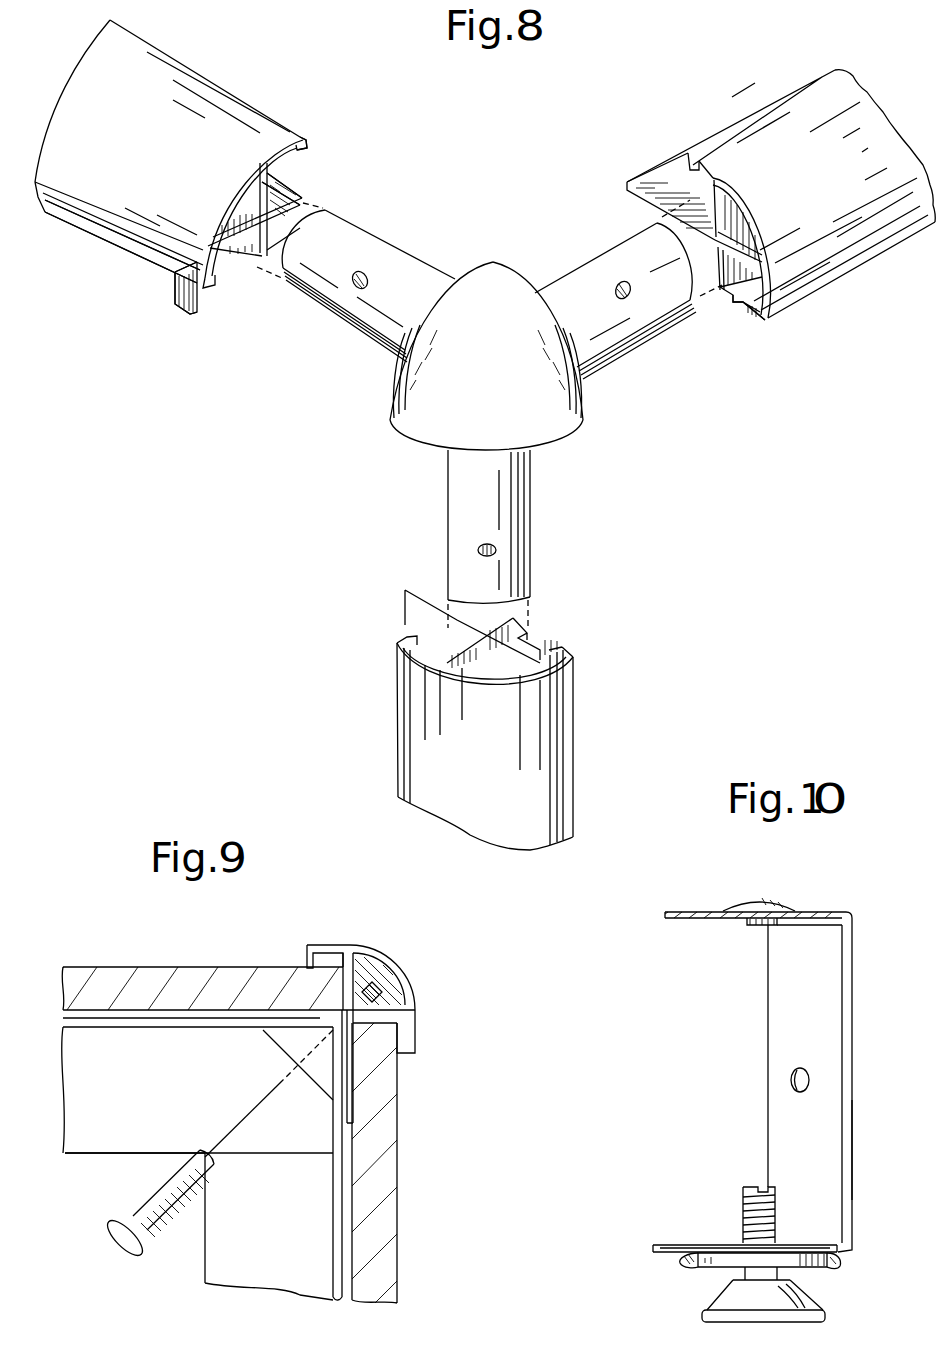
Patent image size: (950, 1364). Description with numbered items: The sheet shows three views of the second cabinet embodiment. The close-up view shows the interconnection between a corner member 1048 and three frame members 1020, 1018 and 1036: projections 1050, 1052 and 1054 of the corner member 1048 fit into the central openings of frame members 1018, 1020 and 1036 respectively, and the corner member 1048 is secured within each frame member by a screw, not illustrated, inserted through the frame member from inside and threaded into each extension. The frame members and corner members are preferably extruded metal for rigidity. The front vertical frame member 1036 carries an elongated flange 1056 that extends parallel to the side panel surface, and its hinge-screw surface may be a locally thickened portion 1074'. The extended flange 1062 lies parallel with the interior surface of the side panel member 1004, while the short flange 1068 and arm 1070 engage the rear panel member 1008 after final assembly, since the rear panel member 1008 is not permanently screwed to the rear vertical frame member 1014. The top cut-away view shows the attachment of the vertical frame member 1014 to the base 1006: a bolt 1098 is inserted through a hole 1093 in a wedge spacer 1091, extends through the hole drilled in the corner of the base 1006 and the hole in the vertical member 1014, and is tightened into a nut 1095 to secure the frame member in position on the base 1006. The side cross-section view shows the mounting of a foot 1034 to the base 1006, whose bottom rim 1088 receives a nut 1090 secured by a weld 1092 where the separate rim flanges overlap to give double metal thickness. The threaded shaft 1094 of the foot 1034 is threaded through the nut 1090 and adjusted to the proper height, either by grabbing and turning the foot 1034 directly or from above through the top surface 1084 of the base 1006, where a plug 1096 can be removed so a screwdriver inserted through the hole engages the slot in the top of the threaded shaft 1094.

In FIG. 8, the frame member 1020 is at (140, 129).
In FIG. 8, the frame member 1018 is at (834, 187).
In FIG. 8, the front vertical frame member 1036 is at (577, 706).
In FIG. 8, the corner member 1048 is at (524, 382).
In FIG. 8, the projection 1050 is at (575, 290).
In FIG. 8, the projection 1052 is at (412, 283).
In FIG. 8, the projection 1054 is at (464, 503).
In FIG. 8, the elongated flange 1056 is at (668, 157).
In FIG. 8, the extended flange 1062 is at (125, 273).
In FIG. 8, the short flange 1068 is at (283, 194).
In FIG. 8, the arm 1070 is at (305, 144).
In FIG. 8, the locally thickened portion 1074' is at (645, 477).
In FIG. 9, the rear panel member 1008 is at (205, 968).
In FIG. 9, the rear vertical frame member 1014 is at (415, 1023).
In FIG. 9, the nut 1095 is at (388, 1001).
In FIG. 9, the side panel member 1004 is at (400, 1160).
In FIG. 9, the hole 1093 is at (305, 1068).
In FIG. 9, the wedge spacer 1091 is at (268, 1049).
In FIG. 10, the wedge spacer 1091 is at (778, 998).
In FIG. 9, the bottom rim 1088 is at (162, 1121).
In FIG. 10, the bottom rim 1088 is at (735, 1250).
In FIG. 9, the base 1006 is at (110, 1167).
In FIG. 10, the base 1006 is at (700, 1033).
In FIG. 9, the bolt 1098 is at (110, 1228).
In FIG. 10, the top surface 1084 is at (697, 913).
In FIG. 10, the plug 1096 is at (785, 903).
In FIG. 10, the threaded shaft 1094 is at (745, 1190).
In FIG. 10, the nut 1090 is at (705, 1266).
In FIG. 10, the weld 1092 is at (835, 1266).
In FIG. 10, the foot 1034 is at (756, 1314).